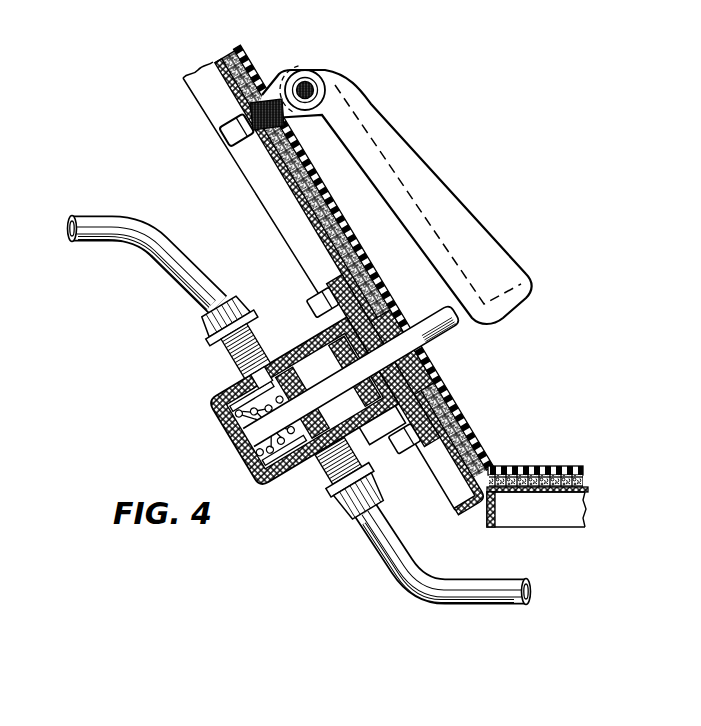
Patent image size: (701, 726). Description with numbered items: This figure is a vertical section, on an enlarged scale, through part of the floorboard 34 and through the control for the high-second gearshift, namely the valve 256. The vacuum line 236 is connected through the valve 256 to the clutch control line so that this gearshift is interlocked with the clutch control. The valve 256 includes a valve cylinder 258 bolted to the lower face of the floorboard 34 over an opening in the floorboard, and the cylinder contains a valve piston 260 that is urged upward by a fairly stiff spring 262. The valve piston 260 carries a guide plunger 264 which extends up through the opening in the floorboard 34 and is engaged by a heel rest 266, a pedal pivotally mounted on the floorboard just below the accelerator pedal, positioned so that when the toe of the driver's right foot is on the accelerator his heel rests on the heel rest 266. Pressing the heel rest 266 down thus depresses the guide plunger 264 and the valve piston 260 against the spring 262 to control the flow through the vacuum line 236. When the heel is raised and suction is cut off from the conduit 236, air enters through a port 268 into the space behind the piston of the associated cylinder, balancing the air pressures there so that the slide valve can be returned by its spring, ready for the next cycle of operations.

The floorboard 34 is at (280, 193).
The vacuum line 236 is at (392, 572).
The valve 256 is at (211, 394).
The valve cylinder 258 is at (293, 343).
The valve piston 260 is at (320, 400).
The spring 262 is at (228, 436).
The guide plunger 264 is at (462, 325).
The heel rest 266 is at (402, 160).
The port 268 is at (365, 430).